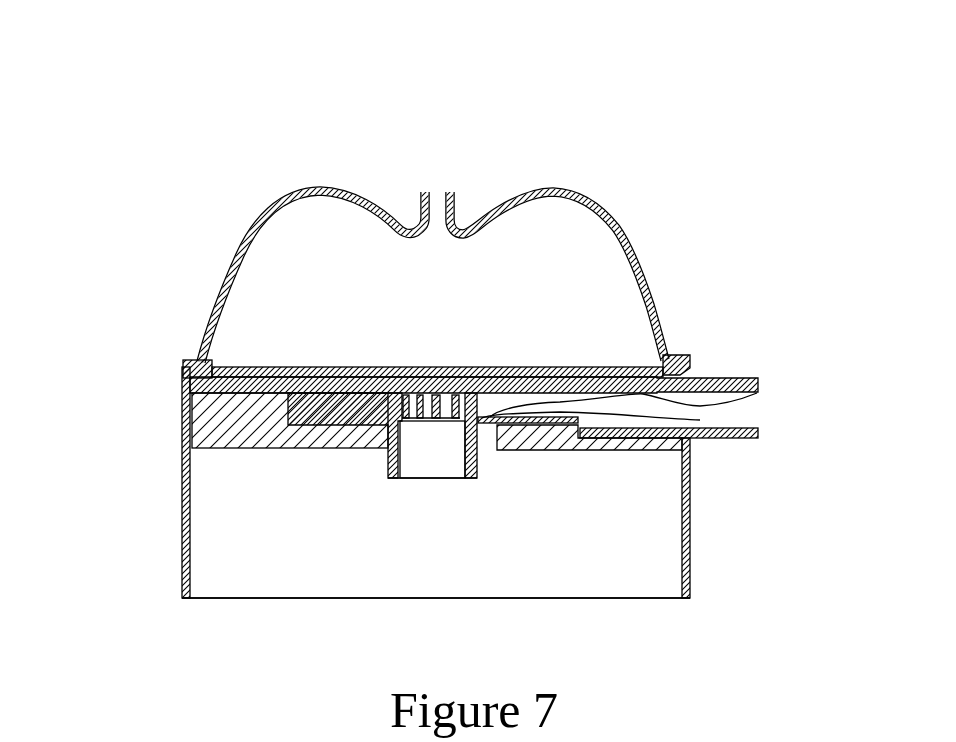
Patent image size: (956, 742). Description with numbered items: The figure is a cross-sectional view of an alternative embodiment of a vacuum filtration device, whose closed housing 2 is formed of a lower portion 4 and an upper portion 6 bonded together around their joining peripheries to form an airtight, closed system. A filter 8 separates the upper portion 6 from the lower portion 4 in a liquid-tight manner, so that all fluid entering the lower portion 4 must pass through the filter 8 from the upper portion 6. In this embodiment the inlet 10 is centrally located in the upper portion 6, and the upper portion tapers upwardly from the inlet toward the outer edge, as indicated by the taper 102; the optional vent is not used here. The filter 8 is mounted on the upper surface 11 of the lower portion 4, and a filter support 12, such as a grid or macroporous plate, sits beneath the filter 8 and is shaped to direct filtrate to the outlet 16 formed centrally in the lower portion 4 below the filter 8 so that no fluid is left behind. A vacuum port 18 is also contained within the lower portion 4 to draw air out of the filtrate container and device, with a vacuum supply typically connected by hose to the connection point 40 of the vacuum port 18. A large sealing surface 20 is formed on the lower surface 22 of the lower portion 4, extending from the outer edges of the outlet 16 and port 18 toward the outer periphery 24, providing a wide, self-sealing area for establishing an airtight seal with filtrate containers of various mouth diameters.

The closed housing 2 is at (175, 368).
The lower portion 4 is at (135, 538).
The upper portion 6 is at (650, 278).
The filter 8 is at (547, 367).
The inlet 10 is at (437, 203).
The upper surface 11 is at (757, 393).
The filter support 12 is at (452, 418).
The outlet 16 is at (432, 453).
The vacuum port 18 is at (700, 420).
The sealing surface 20 is at (242, 443).
The lower surface 22 is at (657, 443).
The outer periphery 24 is at (677, 598).
The connection point 40 is at (735, 440).
The upward taper 102 is at (557, 188).